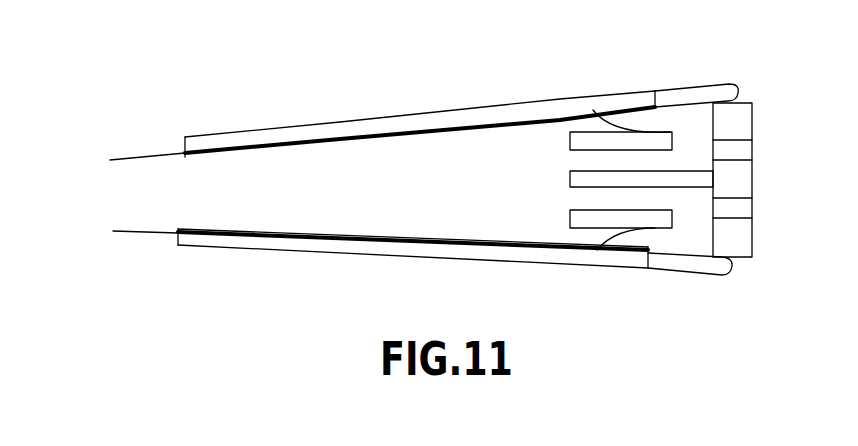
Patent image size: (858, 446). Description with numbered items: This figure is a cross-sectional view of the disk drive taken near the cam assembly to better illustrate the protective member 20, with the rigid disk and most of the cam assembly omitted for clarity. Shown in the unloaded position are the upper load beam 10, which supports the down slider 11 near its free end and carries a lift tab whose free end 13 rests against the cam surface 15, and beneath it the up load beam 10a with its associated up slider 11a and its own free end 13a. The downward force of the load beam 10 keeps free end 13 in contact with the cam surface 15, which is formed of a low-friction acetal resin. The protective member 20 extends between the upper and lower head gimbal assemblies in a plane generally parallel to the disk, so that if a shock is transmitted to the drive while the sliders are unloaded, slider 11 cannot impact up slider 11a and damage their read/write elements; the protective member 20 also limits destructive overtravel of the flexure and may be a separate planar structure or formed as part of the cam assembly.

The load beam 10 is at (271, 130).
The up load beam 10a is at (260, 243).
The slider body 11 is at (600, 138).
The up slider 11a is at (610, 220).
The free end of lift tab 13 is at (677, 98).
The free end of up load beam 13a is at (678, 264).
The cam surface 15 is at (748, 115).
The protective member 20 is at (570, 178).